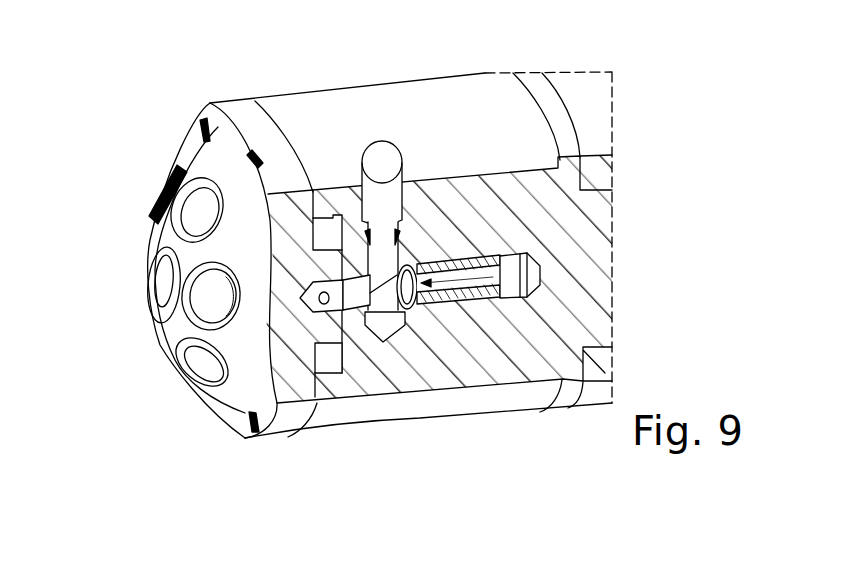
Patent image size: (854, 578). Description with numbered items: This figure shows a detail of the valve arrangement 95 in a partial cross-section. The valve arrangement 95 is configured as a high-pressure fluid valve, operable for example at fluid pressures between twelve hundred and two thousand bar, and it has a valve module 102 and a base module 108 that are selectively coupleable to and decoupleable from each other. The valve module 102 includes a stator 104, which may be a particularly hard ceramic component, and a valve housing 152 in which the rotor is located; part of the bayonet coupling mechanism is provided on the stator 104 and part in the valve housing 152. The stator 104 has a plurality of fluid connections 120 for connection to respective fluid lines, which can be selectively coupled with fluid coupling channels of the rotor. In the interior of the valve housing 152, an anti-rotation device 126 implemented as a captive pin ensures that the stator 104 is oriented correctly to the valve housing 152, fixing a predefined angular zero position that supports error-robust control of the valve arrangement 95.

The valve arrangement 95 is at (646, 158).
The valve module 102 is at (570, 432).
The stator 104 is at (226, 155).
The base module 108 is at (542, 58).
The fluid connections 120 is at (193, 215).
The anti-rotation device 126 is at (538, 274).
The valve housing 152 is at (317, 122).